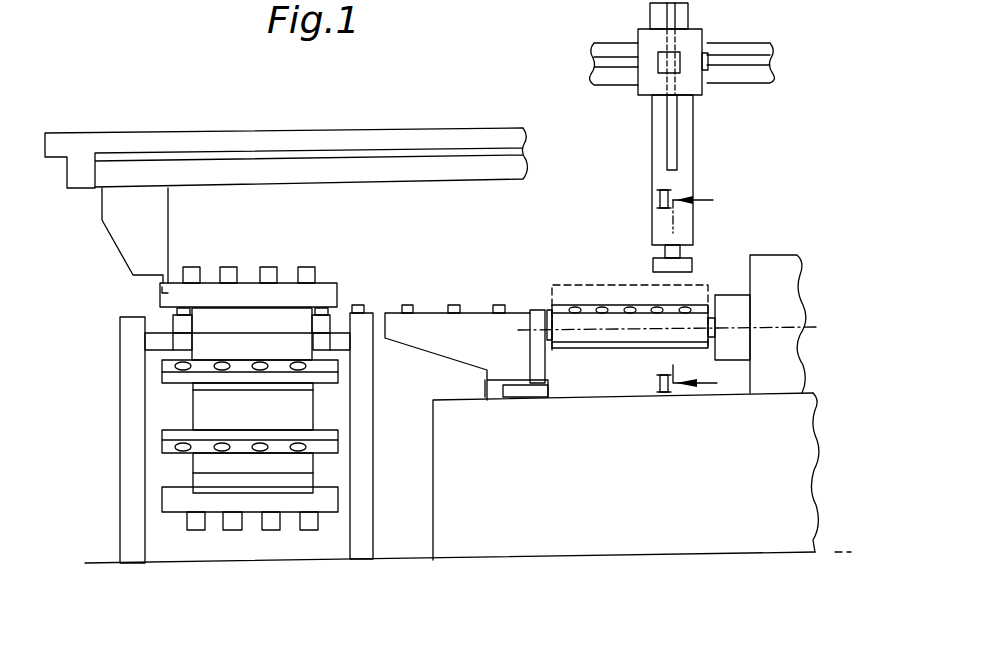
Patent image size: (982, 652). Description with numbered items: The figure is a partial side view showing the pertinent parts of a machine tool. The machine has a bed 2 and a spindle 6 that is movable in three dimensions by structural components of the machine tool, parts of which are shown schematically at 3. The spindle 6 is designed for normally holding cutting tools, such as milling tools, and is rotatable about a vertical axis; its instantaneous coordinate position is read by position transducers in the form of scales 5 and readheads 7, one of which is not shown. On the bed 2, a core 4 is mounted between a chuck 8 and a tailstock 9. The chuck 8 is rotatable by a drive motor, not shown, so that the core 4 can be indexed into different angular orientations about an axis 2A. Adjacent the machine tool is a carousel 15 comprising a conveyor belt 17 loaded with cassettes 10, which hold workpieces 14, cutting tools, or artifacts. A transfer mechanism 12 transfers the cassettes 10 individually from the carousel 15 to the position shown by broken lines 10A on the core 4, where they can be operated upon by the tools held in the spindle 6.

The bed 2 is at (660, 525).
The axis 2A is at (775, 327).
The structural components 3 is at (604, 103).
The core 4 is at (622, 335).
The scales 5 is at (725, 112).
The spindle 6 is at (652, 225).
The readheads 7 is at (678, 52).
The chuck 8 is at (735, 303).
The tailstock 9 is at (538, 357).
The cassettes 10 is at (333, 294).
The cassette position on the core 10A is at (598, 284).
The transfer mechanism 12 is at (112, 220).
The workpieces 14 is at (307, 272).
The carousel 15 is at (96, 289).
The conveyor belt 17 is at (193, 410).